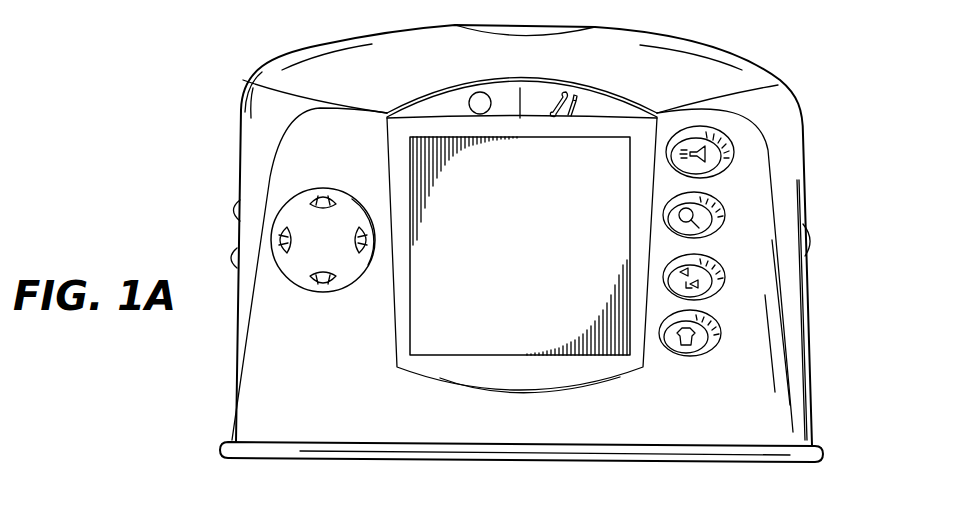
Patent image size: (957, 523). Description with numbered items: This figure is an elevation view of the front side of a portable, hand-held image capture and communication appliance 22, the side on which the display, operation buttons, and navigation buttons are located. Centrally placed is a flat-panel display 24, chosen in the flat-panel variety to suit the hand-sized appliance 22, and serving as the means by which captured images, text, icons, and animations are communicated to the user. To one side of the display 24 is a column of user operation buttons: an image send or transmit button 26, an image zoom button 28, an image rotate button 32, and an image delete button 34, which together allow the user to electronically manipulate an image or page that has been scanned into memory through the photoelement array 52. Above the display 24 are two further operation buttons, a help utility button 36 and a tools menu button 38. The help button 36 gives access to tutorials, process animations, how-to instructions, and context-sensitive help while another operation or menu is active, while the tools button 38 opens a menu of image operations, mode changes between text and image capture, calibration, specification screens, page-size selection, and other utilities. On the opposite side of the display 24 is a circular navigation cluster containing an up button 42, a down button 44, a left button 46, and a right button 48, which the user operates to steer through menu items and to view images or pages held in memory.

The image capture and communication appliance 22 is at (726, 21).
The flat-panel display 24 is at (447, 198).
The image send button 26 is at (730, 152).
The image zoom button 28 is at (708, 217).
The image rotate button 32 is at (708, 279).
The image delete button 34 is at (704, 334).
The help utility button 36 is at (482, 92).
The tools menu button 38 is at (557, 92).
The up button 42 is at (322, 200).
The down button 44 is at (320, 284).
The left button 46 is at (276, 238).
The right button 48 is at (363, 248).
The photoelement array 52 is at (268, 447).